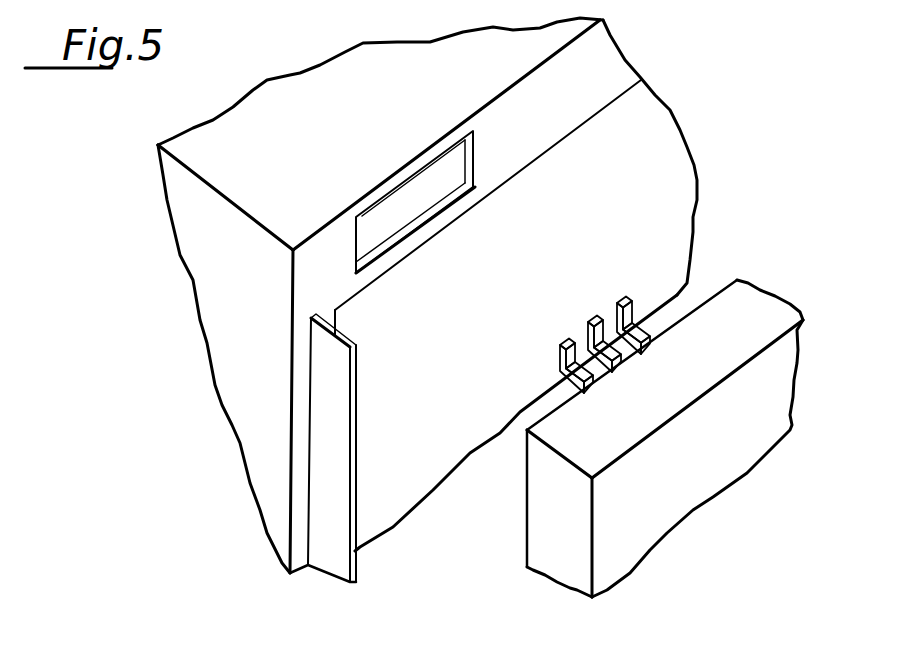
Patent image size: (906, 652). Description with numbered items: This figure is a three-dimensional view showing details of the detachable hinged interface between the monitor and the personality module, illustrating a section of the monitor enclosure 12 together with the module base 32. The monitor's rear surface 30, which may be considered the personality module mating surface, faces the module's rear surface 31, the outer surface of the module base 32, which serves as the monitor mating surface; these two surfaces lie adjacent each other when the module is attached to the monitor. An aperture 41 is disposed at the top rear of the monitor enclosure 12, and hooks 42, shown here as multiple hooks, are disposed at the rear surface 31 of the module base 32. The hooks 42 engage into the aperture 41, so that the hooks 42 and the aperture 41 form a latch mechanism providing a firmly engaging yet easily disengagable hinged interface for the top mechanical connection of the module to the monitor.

The monitor enclosure 12 is at (167, 205).
The rear surface of the monitor 30 is at (673, 156).
The rear surface of the module 31 is at (634, 419).
The module base 32 is at (547, 465).
The apertures 41 is at (383, 210).
The hooks 42 is at (617, 300).